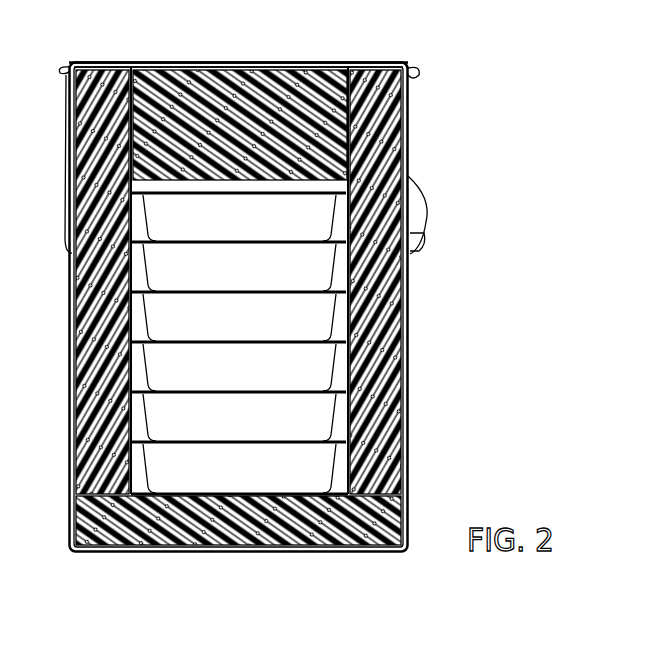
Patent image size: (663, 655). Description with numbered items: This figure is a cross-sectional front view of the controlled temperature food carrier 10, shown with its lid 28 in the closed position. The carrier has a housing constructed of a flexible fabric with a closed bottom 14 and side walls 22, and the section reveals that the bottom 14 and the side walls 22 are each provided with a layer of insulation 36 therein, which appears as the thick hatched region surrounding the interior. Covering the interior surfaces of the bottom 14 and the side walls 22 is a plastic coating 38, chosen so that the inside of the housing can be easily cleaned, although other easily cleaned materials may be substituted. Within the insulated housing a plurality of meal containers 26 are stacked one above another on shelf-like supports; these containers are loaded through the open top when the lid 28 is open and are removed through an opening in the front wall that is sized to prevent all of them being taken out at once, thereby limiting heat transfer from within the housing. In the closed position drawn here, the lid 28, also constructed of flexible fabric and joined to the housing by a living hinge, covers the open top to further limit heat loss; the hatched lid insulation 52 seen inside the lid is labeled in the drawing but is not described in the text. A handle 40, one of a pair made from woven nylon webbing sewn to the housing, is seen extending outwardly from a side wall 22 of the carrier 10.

The controlled temperature food carrier 10 is at (322, 301).
The closed bottom 14 is at (138, 553).
The side walls 22 is at (410, 398).
The meal containers 26 is at (327, 215).
The lid 28 is at (249, 126).
The layer of insulation 36 is at (407, 342).
The plastic coating 38 is at (410, 292).
The handles 40 is at (420, 226).
The lid insulation 52 is at (260, 67).